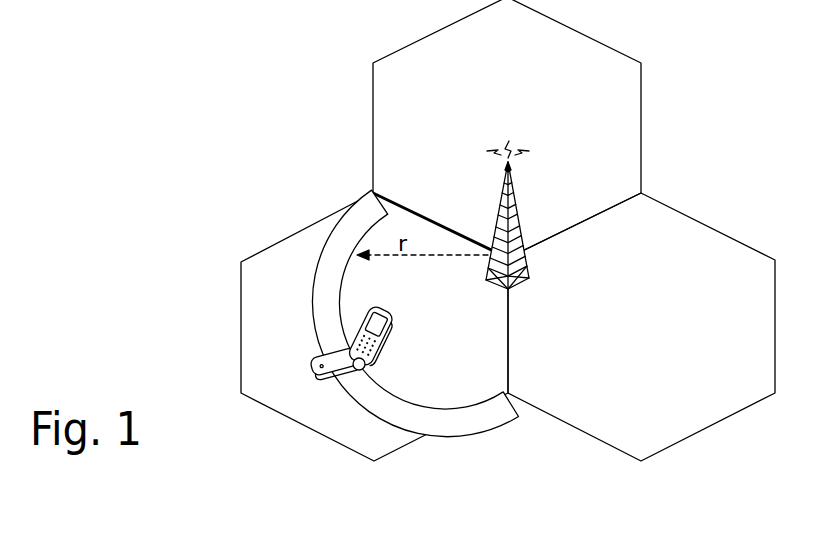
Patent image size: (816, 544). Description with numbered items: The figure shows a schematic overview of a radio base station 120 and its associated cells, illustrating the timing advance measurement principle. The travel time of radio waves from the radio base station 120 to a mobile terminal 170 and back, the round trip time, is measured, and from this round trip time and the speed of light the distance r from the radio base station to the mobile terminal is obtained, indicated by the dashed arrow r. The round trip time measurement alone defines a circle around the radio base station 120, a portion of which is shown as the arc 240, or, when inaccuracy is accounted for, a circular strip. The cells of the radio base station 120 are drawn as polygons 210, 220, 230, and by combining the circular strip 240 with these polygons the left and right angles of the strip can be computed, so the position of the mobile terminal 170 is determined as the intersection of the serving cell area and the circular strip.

The radio base station 120 is at (534, 220).
The mobile terminal 170 is at (333, 352).
The polygon 210 is at (507, 129).
The polygon 220 is at (374, 327).
The third cell 230 is at (641, 327).
The portion of a circle 240 is at (415, 326).